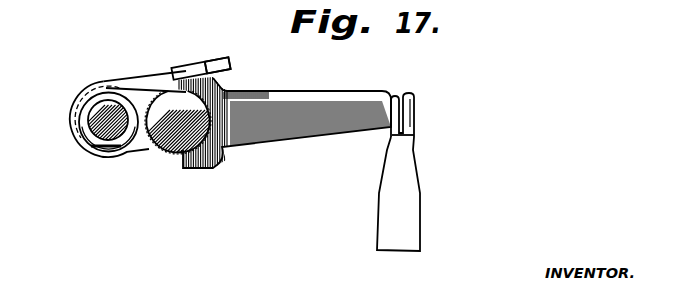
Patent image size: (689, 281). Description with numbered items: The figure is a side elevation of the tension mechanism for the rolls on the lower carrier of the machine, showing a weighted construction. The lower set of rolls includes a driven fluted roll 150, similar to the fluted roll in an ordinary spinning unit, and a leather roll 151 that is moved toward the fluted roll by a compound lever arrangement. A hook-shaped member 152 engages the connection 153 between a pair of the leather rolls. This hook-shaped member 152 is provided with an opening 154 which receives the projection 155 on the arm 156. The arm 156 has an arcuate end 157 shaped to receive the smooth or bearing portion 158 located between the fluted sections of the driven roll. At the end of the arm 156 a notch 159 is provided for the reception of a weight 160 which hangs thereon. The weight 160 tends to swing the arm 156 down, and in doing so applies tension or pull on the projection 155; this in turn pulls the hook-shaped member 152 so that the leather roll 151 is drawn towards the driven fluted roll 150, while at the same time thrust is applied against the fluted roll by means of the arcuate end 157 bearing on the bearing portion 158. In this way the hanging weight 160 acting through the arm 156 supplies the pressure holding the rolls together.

The driven fluted roll 150 is at (175, 143).
The leather roll 151 is at (134, 152).
The hook-shaped member 152 is at (138, 78).
The connection 153 is at (94, 149).
The opening 154 is at (179, 77).
The projection 155 is at (192, 66).
The arm 156 is at (303, 104).
The arcuate end 157 is at (224, 154).
The bearing portion 158 is at (208, 168).
The notch 159 is at (394, 97).
The weight 160 is at (409, 200).